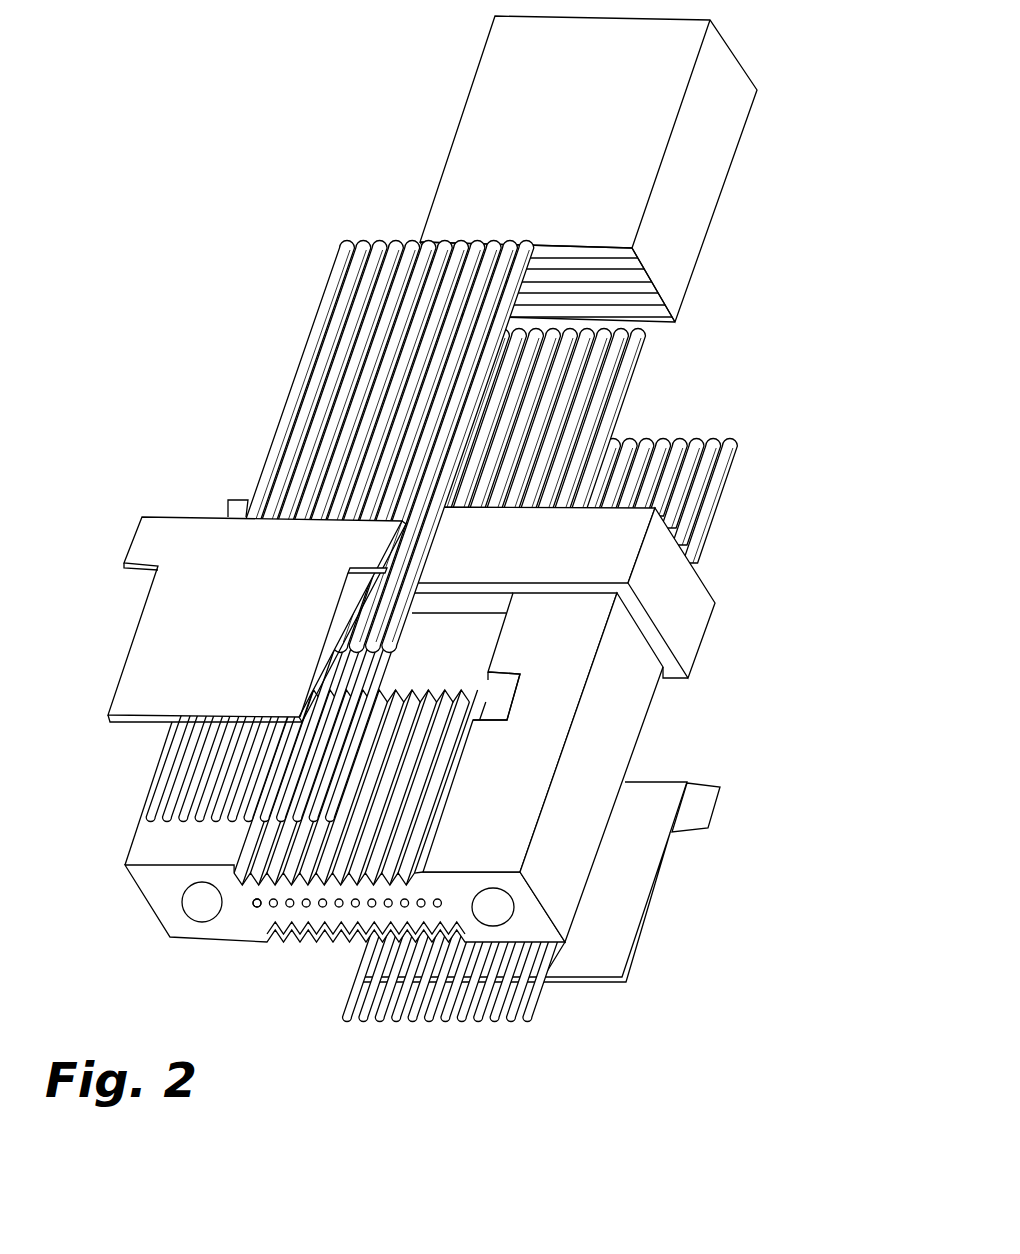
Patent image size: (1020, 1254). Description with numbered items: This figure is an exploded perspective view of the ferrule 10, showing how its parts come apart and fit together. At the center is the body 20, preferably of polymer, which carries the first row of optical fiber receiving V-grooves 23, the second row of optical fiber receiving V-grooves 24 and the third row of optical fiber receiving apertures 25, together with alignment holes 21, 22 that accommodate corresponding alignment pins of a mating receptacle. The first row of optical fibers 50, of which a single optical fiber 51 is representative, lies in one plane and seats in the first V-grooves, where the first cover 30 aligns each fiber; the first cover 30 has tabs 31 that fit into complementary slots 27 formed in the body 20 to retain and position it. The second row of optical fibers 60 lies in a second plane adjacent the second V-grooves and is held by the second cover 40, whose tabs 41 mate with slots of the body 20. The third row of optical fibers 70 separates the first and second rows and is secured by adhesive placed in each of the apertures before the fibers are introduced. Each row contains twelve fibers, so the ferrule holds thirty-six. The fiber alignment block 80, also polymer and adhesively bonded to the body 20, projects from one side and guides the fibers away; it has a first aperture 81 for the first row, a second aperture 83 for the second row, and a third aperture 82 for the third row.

The ferrule 10 is at (136, 191).
The body 20 is at (455, 771).
The alignment hole 21 is at (202, 902).
The alignment hole 22 is at (496, 912).
The first row of optical fiber receiving V-grooves 23 is at (253, 886).
The second row of optical fiber receiving V-grooves 24 is at (313, 932).
The third row of optical fiber receiving apertures 25 is at (255, 907).
The slots 27 is at (500, 702).
The first cover 30 is at (224, 546).
The tabs 31 is at (123, 562).
The second cover 40 is at (614, 884).
The tabs 41 is at (708, 828).
The first row of optical fibers 50 is at (305, 455).
The single optical fiber 51 is at (343, 240).
The second row of optical fibers 60 is at (732, 447).
The third row of optical fibers 70 is at (633, 368).
The fiber alignment block 80 is at (657, 169).
The first aperture 81 is at (620, 267).
The third aperture 82 is at (633, 290).
The second aperture 83 is at (628, 308).